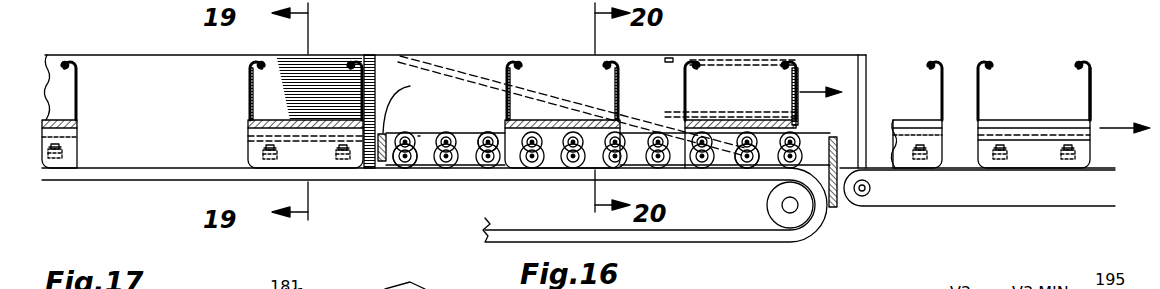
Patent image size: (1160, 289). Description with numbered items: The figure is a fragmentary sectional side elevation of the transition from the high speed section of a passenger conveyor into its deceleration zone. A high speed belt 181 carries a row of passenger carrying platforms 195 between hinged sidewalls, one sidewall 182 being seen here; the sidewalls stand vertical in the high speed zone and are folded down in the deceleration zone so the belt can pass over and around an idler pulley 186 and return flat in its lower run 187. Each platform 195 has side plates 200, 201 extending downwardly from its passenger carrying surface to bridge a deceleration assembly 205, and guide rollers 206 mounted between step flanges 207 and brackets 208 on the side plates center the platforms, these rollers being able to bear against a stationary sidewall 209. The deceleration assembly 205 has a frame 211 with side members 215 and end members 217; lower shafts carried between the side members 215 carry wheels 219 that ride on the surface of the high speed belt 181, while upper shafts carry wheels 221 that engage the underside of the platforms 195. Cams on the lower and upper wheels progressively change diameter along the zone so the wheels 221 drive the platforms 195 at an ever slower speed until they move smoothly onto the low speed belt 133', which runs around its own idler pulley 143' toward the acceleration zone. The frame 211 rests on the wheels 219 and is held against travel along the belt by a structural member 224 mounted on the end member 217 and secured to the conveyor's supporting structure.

The hinged sidewall 182 is at (150, 78).
The passenger carrying platform 195 is at (58, 120).
The side plate 201 is at (250, 152).
The deceleration assembly 205 is at (380, 165).
The stationary sidewall 209 is at (462, 65).
The side member 215 is at (470, 135).
The wheel 219 is at (415, 168).
The frame 211 is at (465, 150).
The end member 217 is at (878, 98).
The wheel 221 is at (418, 132).
The structural member 224 is at (840, 210).
The side plate 200 is at (1035, 178).
The idler pulley 143' is at (891, 187).
The low speed belt 133' is at (1080, 199).
The high speed belt 181 is at (768, 240).
The lower run 187 is at (695, 240).
The idler pulley 186 is at (803, 215).
The bracket 208 is at (1050, 165).
The guide roller 206 is at (1050, 162).
The step flange 207 is at (990, 140).